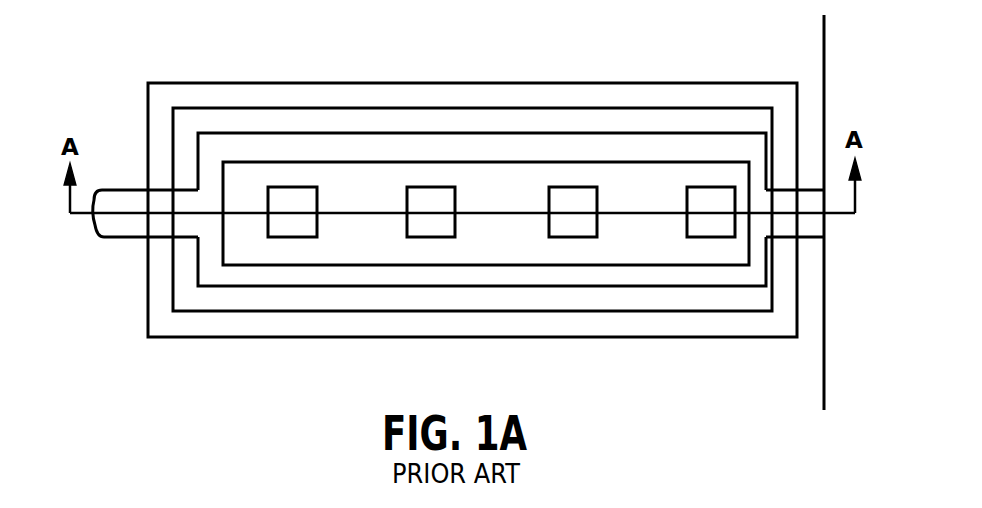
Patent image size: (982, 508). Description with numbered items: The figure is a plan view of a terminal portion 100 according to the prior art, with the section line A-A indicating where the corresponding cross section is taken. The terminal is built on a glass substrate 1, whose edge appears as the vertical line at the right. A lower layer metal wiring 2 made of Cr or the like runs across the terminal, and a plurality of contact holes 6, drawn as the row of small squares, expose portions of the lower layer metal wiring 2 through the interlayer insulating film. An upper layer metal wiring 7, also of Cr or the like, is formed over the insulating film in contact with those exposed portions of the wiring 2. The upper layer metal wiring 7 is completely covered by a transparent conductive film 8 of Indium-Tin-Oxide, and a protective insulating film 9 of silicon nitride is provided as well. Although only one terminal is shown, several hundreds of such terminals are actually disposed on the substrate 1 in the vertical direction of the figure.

The prior art semiconductor device 100 is at (397, 60).
The glass substrate 1 is at (826, 82).
The lower layer metal wiring 2 is at (280, 133).
The contact holes 6 is at (428, 237).
The upper layer metal wiring 7 is at (474, 108).
The transparent conductive film 8 is at (565, 82).
The protective insulating film 9 is at (598, 163).